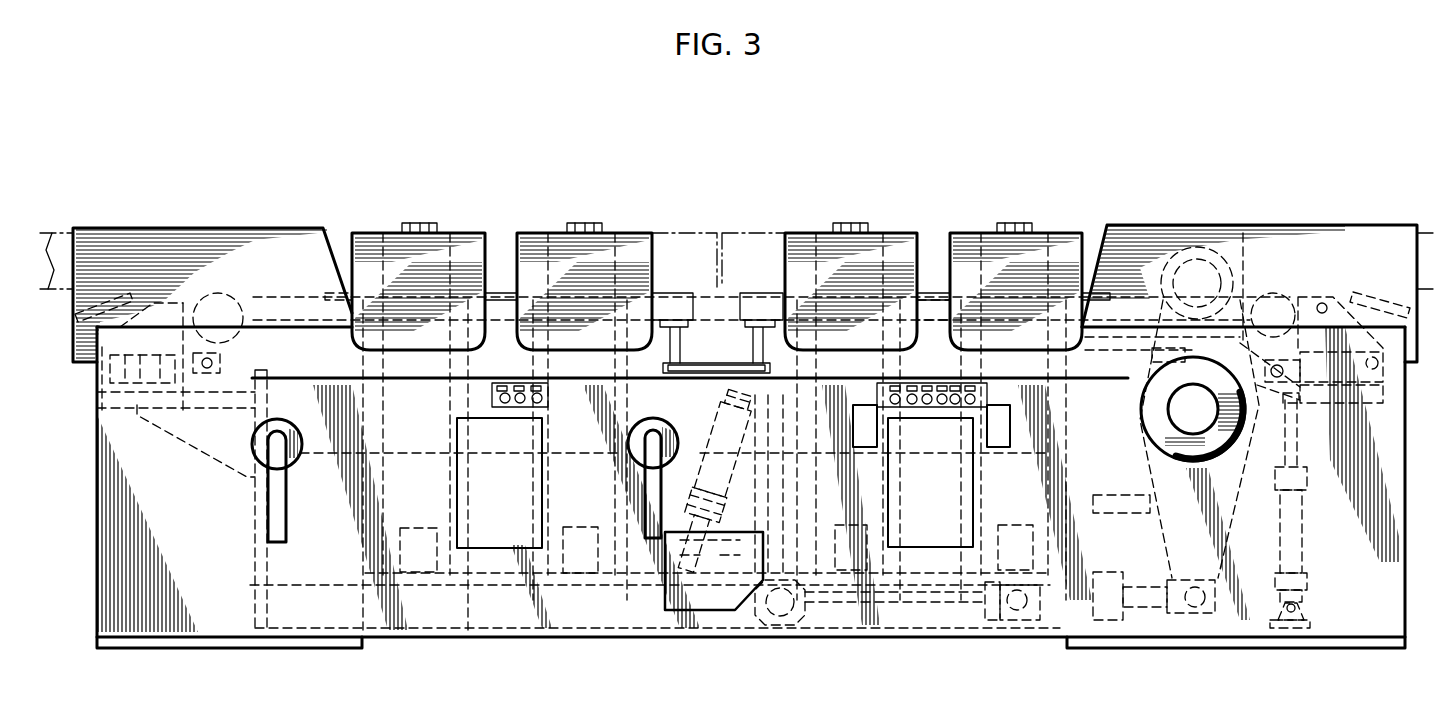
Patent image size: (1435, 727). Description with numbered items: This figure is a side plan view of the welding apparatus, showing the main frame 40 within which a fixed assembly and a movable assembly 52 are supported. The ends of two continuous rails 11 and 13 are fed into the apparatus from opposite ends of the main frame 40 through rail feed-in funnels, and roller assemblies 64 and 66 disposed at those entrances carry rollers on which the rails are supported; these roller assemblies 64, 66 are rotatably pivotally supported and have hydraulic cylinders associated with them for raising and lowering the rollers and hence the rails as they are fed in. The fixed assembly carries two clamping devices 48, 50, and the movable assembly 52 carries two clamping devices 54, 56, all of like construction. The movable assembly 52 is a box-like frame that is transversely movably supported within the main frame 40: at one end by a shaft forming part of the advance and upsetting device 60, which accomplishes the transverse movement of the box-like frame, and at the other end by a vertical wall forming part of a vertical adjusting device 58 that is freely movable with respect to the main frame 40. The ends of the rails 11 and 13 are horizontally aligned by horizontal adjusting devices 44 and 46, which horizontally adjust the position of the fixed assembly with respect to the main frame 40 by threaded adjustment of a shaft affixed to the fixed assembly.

The continuous rail 11 is at (740, 243).
The continuous rail 13 is at (677, 238).
The main frame 40 is at (923, 618).
The horizontal adjusting device 44 is at (300, 462).
The horizontal adjusting device 46 is at (640, 455).
The clamping device 48 is at (468, 238).
The clamping device 50 is at (637, 238).
The movable assembly 52 is at (933, 250).
The clamping device 54 is at (870, 252).
The clamping device 56 is at (1037, 247).
The vertical adjusting device 58 is at (740, 522).
The advance and upsetting device 60 is at (1217, 548).
The roller assembly 64 is at (210, 300).
The roller assembly 66 is at (1273, 303).